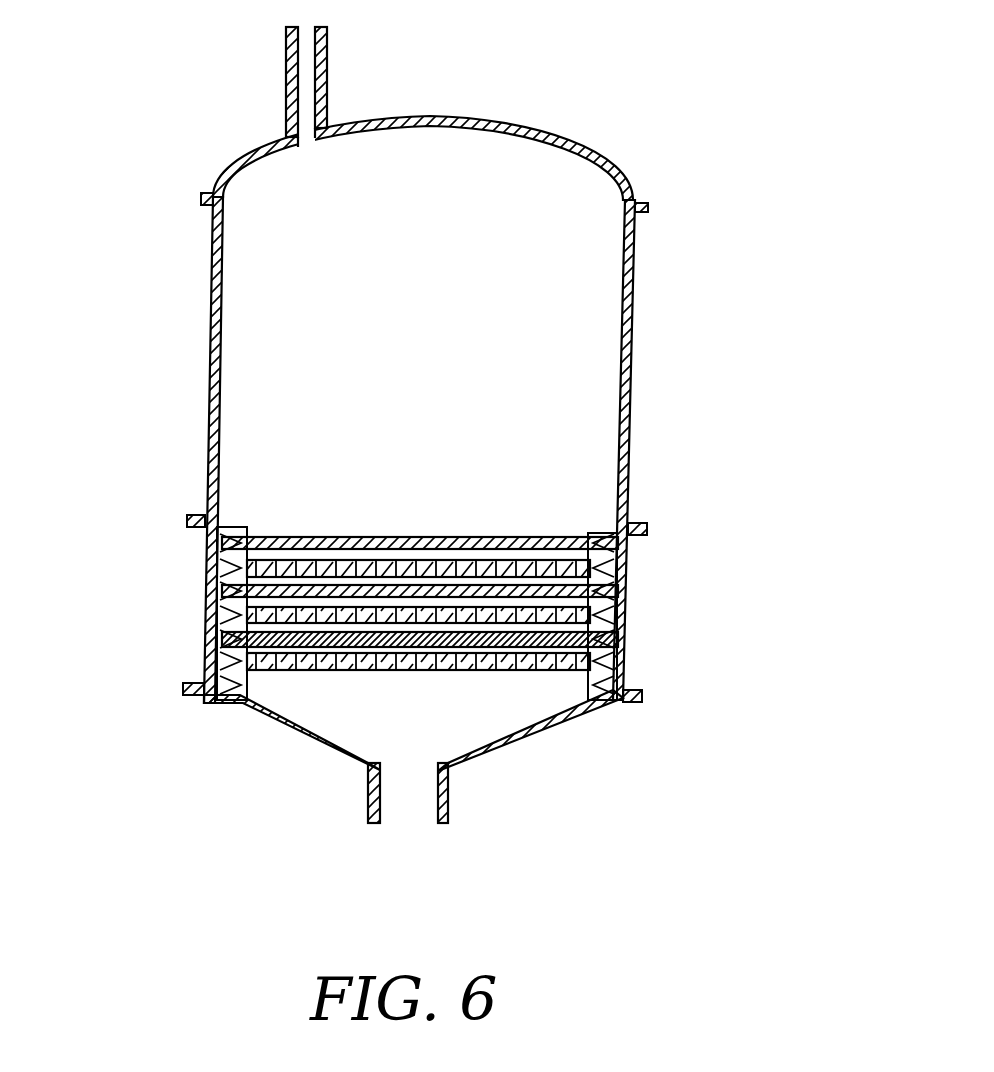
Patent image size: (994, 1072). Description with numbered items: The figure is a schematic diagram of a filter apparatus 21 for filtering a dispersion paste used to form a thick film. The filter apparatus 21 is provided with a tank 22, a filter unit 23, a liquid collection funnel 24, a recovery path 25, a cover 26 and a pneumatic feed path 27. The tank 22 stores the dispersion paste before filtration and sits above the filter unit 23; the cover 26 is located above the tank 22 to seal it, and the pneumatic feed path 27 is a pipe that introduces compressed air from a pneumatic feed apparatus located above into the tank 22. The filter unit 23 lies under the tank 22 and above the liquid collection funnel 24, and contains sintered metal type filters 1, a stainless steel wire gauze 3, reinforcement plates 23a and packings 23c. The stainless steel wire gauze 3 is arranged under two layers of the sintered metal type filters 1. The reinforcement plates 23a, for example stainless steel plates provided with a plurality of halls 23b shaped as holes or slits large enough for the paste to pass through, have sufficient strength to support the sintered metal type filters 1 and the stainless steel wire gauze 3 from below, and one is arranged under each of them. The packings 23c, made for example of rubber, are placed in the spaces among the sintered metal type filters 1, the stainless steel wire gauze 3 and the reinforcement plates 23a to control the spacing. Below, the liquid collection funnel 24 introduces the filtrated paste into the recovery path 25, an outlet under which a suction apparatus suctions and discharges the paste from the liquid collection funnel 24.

The filter apparatus 21 is at (586, 103).
The tank 22 is at (635, 327).
The cover 26 is at (612, 160).
The pneumatic feed path 27 is at (322, 58).
The filter unit 23 is at (455, 655).
The sintered metal type filter 1 is at (632, 553).
The stainless steel wire gauze 3 is at (625, 643).
The reinforcement plate 23a is at (630, 577).
The hall 23b is at (262, 672).
The packing 23c is at (205, 647).
The liquid collection funnel 24 is at (327, 757).
The recovery path 25 is at (448, 808).